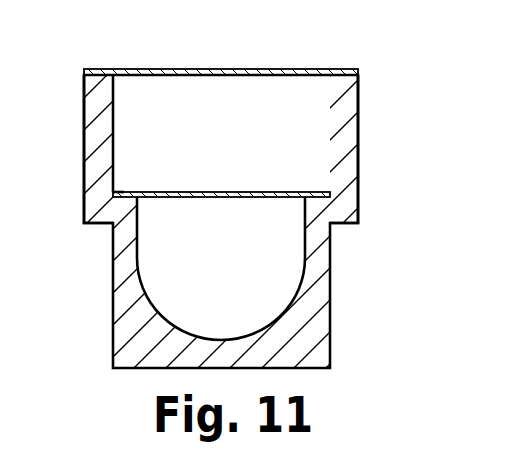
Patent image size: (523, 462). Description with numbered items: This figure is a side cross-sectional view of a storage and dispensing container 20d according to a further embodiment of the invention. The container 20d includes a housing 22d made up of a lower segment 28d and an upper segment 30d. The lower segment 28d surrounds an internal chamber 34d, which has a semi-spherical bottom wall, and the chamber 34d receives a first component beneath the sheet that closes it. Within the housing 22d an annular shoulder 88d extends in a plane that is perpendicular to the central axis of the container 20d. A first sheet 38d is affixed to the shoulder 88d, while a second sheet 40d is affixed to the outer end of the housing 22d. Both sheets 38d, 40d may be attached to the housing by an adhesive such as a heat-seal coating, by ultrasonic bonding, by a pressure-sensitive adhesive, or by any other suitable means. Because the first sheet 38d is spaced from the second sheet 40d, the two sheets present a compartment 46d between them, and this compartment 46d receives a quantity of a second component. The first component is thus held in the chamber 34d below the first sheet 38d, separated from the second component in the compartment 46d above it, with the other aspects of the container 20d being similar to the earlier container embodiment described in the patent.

The container 20d is at (261, 225).
The housing 22d is at (360, 177).
The lower segment 28d is at (303, 320).
The upper segment 30d is at (84, 189).
The internal chamber 34d is at (303, 262).
The first sheet 38d is at (260, 192).
The second sheet 40d is at (198, 69).
The compartment 46d is at (113, 133).
The annular shoulder 88d is at (117, 192).